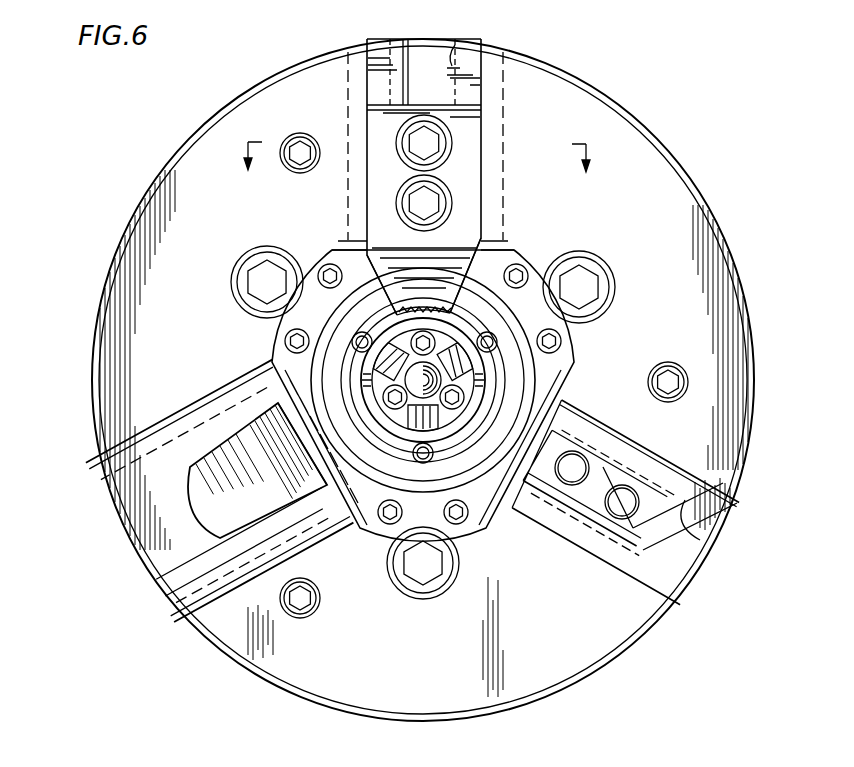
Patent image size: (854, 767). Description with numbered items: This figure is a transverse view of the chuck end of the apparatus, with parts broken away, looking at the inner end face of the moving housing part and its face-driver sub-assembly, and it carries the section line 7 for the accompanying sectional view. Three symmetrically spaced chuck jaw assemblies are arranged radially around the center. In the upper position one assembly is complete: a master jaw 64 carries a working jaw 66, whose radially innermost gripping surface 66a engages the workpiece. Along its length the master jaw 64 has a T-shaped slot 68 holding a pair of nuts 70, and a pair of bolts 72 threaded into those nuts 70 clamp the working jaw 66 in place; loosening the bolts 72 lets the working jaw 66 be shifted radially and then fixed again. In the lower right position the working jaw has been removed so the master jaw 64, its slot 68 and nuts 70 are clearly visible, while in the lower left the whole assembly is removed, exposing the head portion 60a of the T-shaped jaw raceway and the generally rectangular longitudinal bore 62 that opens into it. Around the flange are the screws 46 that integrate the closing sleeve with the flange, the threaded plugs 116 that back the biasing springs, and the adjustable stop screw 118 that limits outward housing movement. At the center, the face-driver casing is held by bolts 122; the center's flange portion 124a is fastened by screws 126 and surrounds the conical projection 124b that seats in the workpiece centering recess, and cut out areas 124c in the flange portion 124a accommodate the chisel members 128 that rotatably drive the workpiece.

The section line 7- 7 is at (415, 168).
The screws 46 is at (331, 264).
The head portion of jaw raceway 60a is at (228, 583).
The bores 62 is at (192, 480).
The master jaw 64 is at (427, 44).
The working jaw 66 is at (468, 132).
The gripping surface 66a is at (473, 276).
The slot 68 is at (457, 48).
The nuts 70 is at (648, 495).
The bolts 72 is at (449, 204).
The plug 116 is at (238, 264).
The stop screw 118 is at (671, 363).
The bolts 122 is at (458, 524).
The flange portion of center 124a is at (438, 432).
The central conical projection 124b is at (380, 522).
The cut out areas 124c is at (458, 374).
The screws 126 is at (466, 398).
The chisel members 128 is at (455, 340).